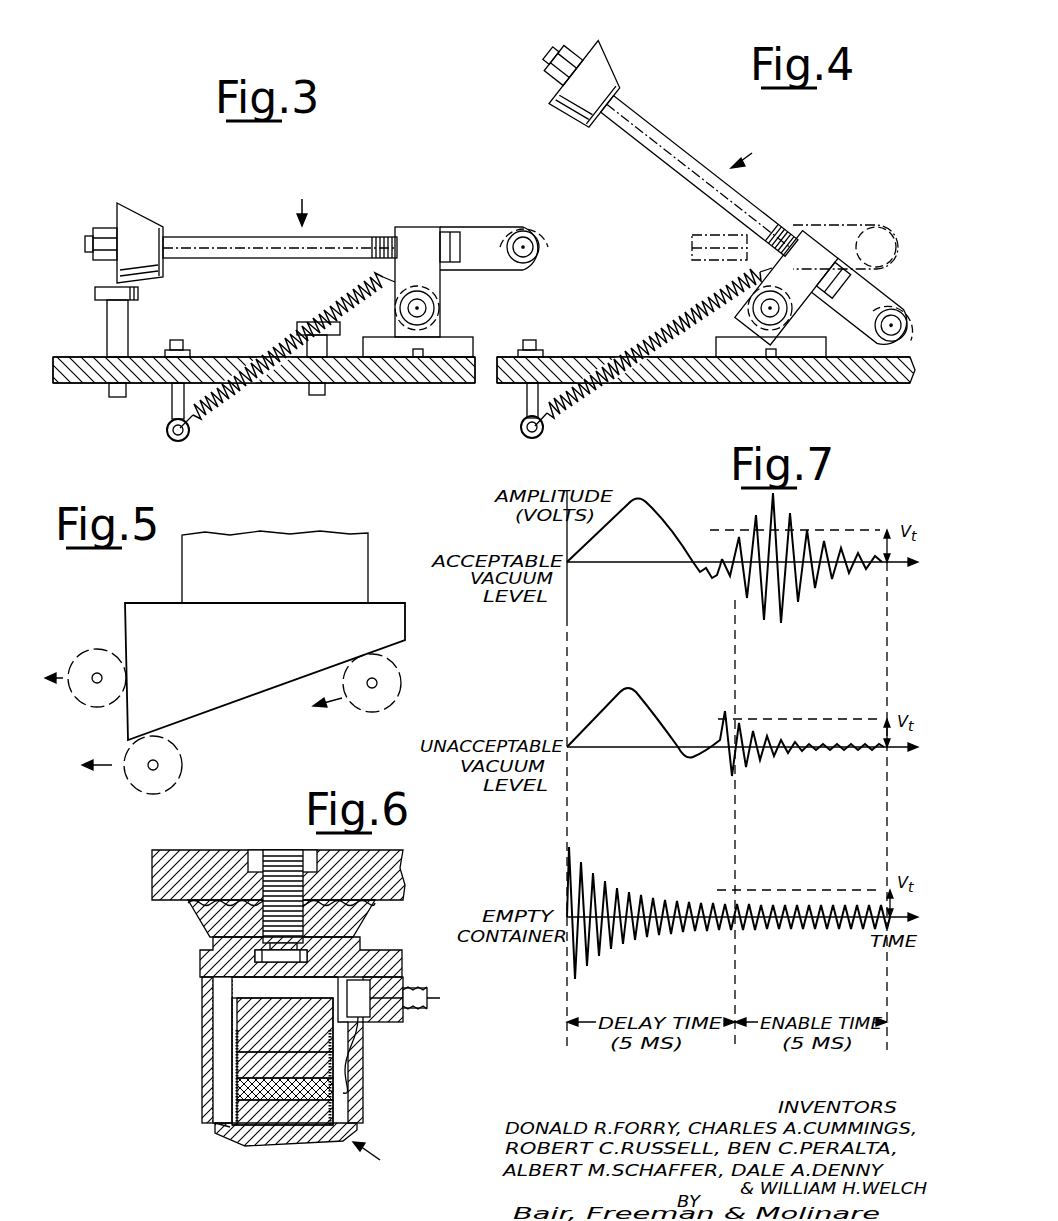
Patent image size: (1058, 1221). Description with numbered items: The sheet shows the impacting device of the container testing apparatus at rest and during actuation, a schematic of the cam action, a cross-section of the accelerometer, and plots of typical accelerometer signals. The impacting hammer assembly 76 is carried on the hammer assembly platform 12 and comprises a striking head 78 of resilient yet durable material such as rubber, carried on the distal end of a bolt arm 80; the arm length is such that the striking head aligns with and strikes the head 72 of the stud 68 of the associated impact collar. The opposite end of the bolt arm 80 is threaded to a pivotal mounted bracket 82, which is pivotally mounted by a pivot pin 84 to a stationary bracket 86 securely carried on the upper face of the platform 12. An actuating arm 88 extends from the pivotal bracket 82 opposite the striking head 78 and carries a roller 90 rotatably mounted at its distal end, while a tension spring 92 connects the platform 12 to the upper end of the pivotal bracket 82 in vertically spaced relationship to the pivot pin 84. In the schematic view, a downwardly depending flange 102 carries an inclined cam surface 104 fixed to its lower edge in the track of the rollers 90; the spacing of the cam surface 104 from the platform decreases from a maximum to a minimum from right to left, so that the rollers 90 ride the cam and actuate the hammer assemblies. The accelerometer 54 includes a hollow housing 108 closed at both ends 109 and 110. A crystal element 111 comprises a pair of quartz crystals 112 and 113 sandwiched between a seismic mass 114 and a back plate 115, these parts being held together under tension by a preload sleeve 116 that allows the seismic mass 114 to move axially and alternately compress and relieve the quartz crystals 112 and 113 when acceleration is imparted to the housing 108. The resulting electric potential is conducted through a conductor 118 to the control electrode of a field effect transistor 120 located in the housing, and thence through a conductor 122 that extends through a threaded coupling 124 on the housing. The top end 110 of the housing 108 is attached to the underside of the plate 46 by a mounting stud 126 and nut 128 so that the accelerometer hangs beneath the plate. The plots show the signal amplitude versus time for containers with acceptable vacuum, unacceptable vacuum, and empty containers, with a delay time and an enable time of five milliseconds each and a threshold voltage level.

In FIG. 3, the hammer assembly platform 12 is at (365, 372).
In FIG. 4, the hammer assembly platform 12 is at (714, 377).
In FIG. 6, the plate 46 is at (170, 890).
In FIG. 6, the accelerometer 54 is at (379, 1160).
In FIG. 3, the stud 68 is at (105, 323).
In FIG. 3, the head 72 is at (100, 287).
In FIG. 3, the impacting hammer assembly 76 is at (302, 201).
In FIG. 4, the impacting hammer assembly 76 is at (754, 154).
In FIG. 3, the striking head 78 is at (135, 203).
In FIG. 4, the striking head 78 is at (612, 62).
In FIG. 3, the bolt arm 80 is at (210, 237).
In FIG. 4, the bolt arm 80 is at (688, 180).
In FIG. 3, the pivotal mounted bracket 82 is at (430, 280).
In FIG. 4, the pivotal mounted bracket 82 is at (733, 253).
In FIG. 3, the pivot pin 84 is at (422, 310).
In FIG. 4, the pivot pin 84 is at (780, 320).
In FIG. 3, the stationary bracket 86 is at (458, 343).
In FIG. 4, the stationary bracket 86 is at (720, 343).
In FIG. 3, the actuating arm 88 is at (470, 228).
In FIG. 4, the actuating arm 88 is at (853, 317).
In FIG. 3, the roller 90 is at (512, 227).
In FIG. 4, the roller 90 is at (877, 225).
In FIG. 5, the roller 90 is at (98, 649).
In FIG. 3, the tension spring 92 is at (283, 340).
In FIG. 4, the tension spring 92 is at (657, 330).
In FIG. 5, the flange 102 is at (303, 528).
In FIG. 5, the inclined cam surface 104 is at (270, 692).
In FIG. 6, the housing 108 is at (208, 1002).
In FIG. 6, the end 109 is at (310, 1142).
In FIG. 6, the top end 110 is at (343, 943).
In FIG. 6, the crystal element 111 is at (226, 1083).
In FIG. 6, the quartz crystal 112 is at (343, 1108).
In FIG. 6, the quartz crystal 113 is at (360, 1070).
In FIG. 6, the seismic mass 114 is at (285, 1038).
In FIG. 6, the back plate 115 is at (267, 1120).
In FIG. 6, the preload sleeve 116 is at (230, 1127).
In FIG. 6, the conductor 118 is at (347, 1045).
In FIG. 6, the field effect transistor 120 is at (347, 987).
In FIG. 6, the conductor 122 is at (440, 998).
In FIG. 6, the threaded coupling 124 is at (423, 1010).
In FIG. 6, the mounting stud 126 is at (292, 920).
In FIG. 6, the nut 128 is at (257, 857).